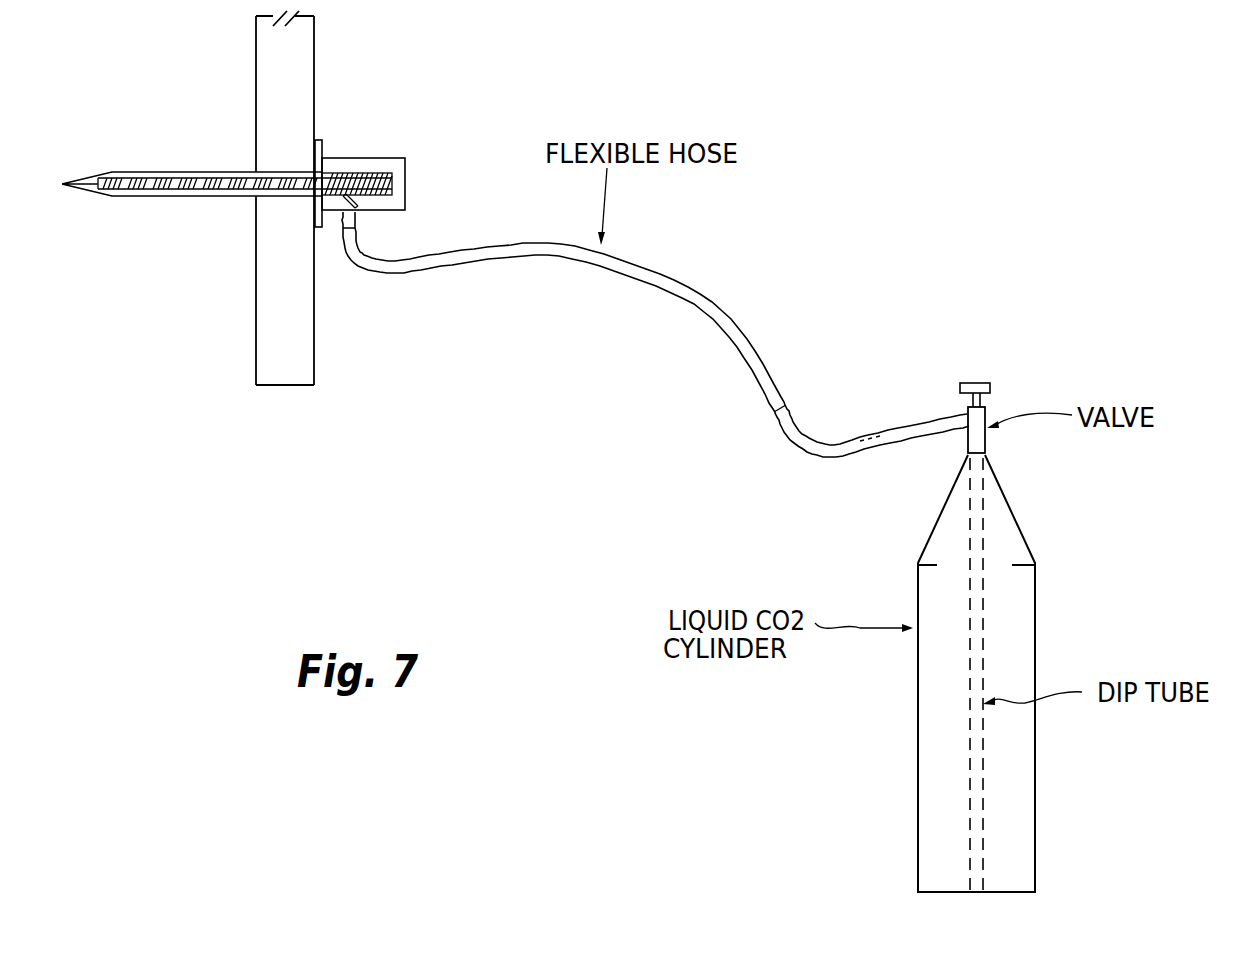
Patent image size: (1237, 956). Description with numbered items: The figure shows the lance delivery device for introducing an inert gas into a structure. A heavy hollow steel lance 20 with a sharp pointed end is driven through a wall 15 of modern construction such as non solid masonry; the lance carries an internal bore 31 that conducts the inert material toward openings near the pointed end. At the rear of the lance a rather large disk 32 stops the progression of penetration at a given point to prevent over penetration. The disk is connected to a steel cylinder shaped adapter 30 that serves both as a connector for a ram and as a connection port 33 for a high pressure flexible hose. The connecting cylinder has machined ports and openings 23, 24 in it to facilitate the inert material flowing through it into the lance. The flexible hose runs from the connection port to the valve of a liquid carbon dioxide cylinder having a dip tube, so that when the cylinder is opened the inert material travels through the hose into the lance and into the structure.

The wall 15 is at (314, 75).
The needle 20 is at (187, 170).
The needle rear portion 23 is at (346, 176).
The fitting core 24 is at (383, 167).
The coupling body 30 is at (405, 163).
The needle bore 31 is at (215, 190).
The flange 32 is at (320, 228).
The outlet port 33 is at (350, 198).